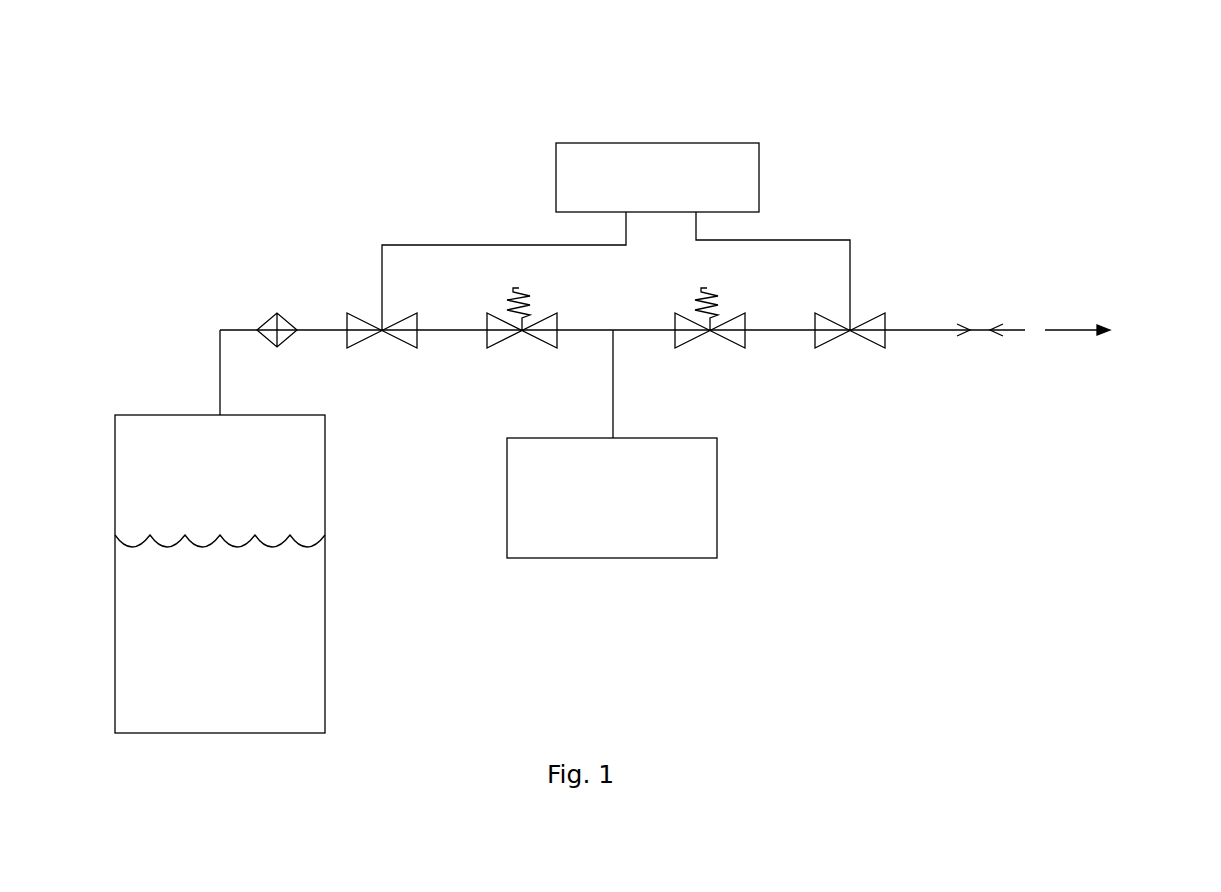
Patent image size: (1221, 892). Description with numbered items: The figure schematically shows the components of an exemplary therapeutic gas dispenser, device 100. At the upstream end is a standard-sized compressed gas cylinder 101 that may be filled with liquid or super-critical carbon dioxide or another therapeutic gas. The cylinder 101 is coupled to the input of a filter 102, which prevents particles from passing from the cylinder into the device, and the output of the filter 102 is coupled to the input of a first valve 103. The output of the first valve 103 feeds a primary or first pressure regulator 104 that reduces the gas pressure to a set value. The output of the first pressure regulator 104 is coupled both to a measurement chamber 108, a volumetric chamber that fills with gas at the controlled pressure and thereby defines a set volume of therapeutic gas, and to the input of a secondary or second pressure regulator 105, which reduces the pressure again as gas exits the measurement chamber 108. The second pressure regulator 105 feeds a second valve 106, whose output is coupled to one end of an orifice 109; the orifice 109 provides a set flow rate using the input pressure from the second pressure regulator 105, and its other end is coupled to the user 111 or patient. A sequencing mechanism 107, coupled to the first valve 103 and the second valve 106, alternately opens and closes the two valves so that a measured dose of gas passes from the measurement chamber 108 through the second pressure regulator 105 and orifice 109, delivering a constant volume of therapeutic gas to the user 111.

The device 100 is at (1028, 99).
The compressed gas cylinder 101 is at (183, 412).
The filter 102 is at (266, 314).
The first valve 103 is at (368, 316).
The first pressure regulator 104 is at (502, 314).
The second pressure regulator 105 is at (685, 313).
The second valve 106 is at (828, 313).
The sequencing mechanism 107 is at (720, 141).
The measurement chamber 108 is at (506, 470).
The orifice 109 is at (983, 323).
The user 111 is at (1173, 322).